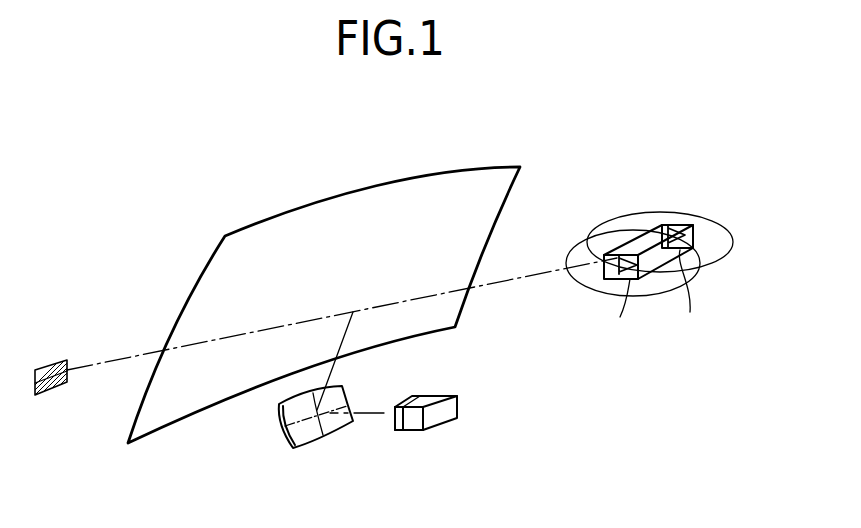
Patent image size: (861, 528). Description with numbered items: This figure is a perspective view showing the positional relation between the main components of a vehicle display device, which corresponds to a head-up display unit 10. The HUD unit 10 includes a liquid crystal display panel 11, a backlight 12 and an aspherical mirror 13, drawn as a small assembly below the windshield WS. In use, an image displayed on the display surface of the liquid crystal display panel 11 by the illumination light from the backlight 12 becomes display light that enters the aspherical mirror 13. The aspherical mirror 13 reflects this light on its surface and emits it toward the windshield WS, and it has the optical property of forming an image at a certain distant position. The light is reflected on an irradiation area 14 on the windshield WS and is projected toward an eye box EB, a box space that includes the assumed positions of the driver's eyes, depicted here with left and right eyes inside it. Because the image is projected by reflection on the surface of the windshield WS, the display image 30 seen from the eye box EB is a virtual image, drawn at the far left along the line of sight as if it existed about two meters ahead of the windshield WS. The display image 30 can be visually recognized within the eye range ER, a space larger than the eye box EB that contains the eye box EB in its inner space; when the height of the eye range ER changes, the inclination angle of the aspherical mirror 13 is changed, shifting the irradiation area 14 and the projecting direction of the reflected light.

The head-up display unit 10 is at (484, 446).
The liquid crystal display panel 11 is at (398, 430).
The backlight 12 is at (452, 410).
The aspherical mirror 13 is at (278, 437).
The irradiation area 14 is at (353, 312).
The display image 30 is at (45, 367).
The windshield WS is at (417, 175).
The eye range ER is at (698, 212).
The eye box EB is at (733, 242).